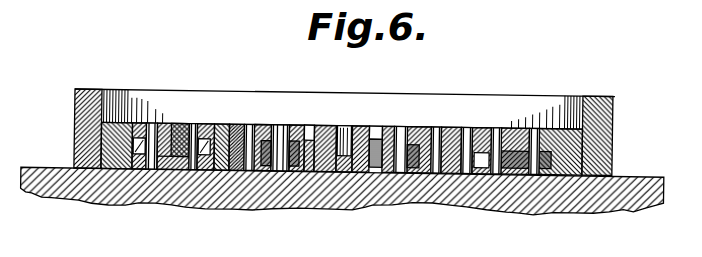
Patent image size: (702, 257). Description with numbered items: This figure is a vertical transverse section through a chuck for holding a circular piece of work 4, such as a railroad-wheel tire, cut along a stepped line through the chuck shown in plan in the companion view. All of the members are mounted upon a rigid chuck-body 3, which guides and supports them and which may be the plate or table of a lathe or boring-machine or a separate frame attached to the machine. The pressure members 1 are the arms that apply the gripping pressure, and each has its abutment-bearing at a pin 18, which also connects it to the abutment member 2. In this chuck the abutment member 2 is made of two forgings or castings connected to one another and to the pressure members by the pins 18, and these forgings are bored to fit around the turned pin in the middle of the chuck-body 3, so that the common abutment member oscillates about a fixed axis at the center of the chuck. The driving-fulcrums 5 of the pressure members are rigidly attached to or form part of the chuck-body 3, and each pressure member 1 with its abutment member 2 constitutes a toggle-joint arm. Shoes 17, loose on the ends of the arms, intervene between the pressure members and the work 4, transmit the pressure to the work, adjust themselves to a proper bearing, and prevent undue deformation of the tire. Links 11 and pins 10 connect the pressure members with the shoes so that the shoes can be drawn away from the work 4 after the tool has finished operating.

The pressure member 1 is at (216, 122).
The abutment member 2 is at (319, 122).
The chuck-body 3 is at (362, 122).
The work 4 is at (88, 89).
The driving-fulcrum 5 is at (240, 122).
The pin 10 is at (160, 122).
The link 11 is at (158, 174).
The shoe 17 is at (128, 95).
The pin 18 is at (296, 122).